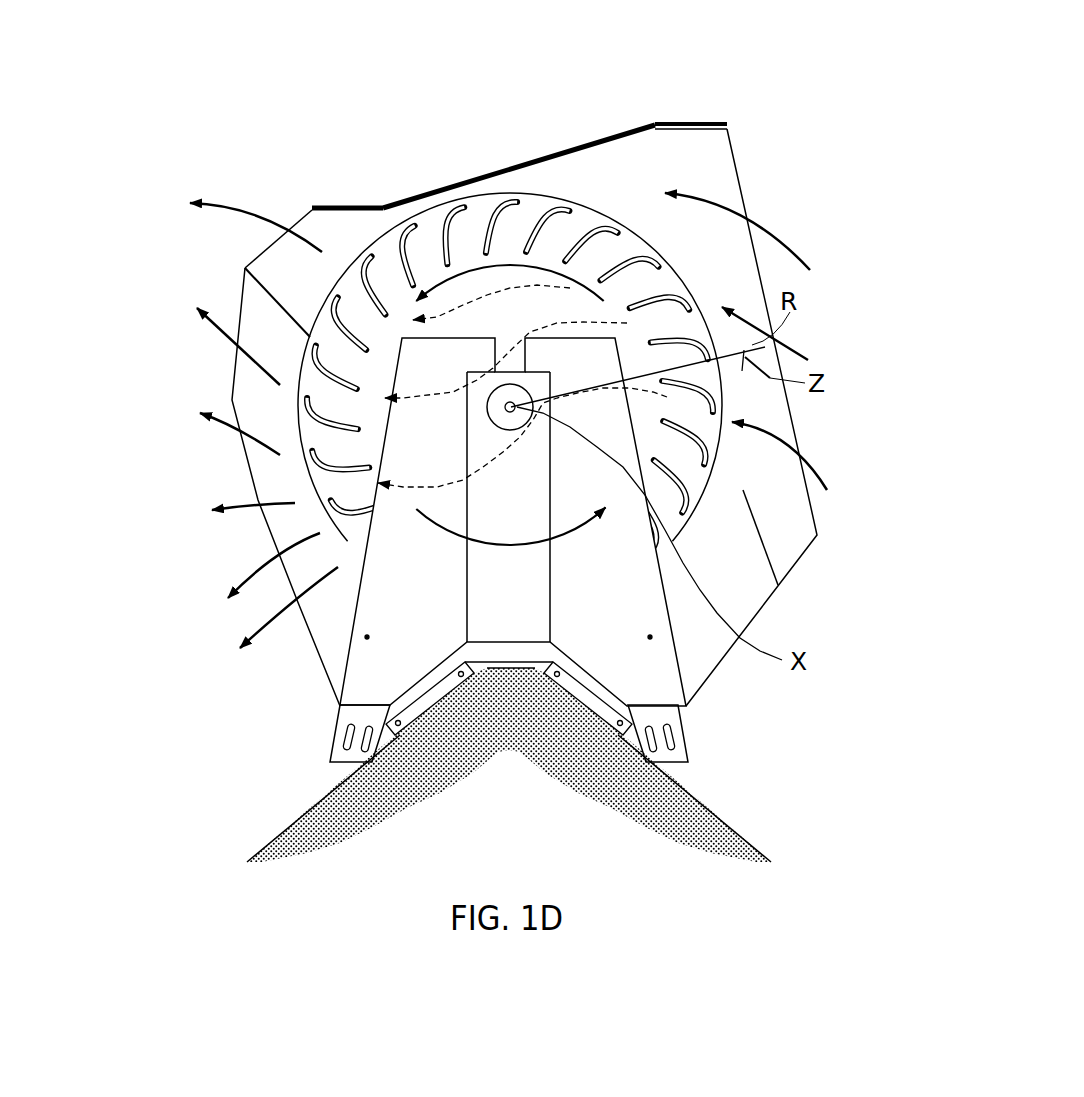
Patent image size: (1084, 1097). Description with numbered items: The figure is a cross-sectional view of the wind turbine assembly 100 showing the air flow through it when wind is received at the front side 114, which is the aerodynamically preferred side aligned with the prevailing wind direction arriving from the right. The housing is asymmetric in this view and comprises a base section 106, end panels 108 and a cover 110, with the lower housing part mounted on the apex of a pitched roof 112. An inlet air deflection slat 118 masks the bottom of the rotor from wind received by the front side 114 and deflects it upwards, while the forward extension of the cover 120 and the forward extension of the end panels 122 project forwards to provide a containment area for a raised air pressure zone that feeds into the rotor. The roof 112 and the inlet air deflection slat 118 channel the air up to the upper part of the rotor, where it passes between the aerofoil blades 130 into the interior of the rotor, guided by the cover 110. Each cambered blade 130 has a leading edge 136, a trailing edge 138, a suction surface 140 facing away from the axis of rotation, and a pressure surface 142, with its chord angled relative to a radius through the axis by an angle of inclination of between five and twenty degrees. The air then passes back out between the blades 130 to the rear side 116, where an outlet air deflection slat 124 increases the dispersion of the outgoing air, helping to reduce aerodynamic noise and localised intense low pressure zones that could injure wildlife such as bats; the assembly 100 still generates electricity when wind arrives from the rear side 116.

The wind turbine assembly 100 is at (236, 57).
The base section 106 is at (437, 712).
The end panels 108 is at (365, 685).
The cover 110 is at (483, 177).
The pitched roof 112 is at (585, 787).
The front side 114 is at (895, 99).
The rear side 116 is at (142, 104).
The inlet air deflection slat 118 is at (768, 553).
The forward extension of the cover 120 is at (660, 122).
The forward extension of the end panels 122 is at (798, 517).
The outlet air deflection slat 124 is at (265, 295).
The aerofoil blades 130 is at (292, 420).
The leading edge 136 is at (513, 200).
The trailing edge 138 is at (383, 313).
The suction surface 140 is at (597, 227).
The pressure surface 142 is at (338, 308).